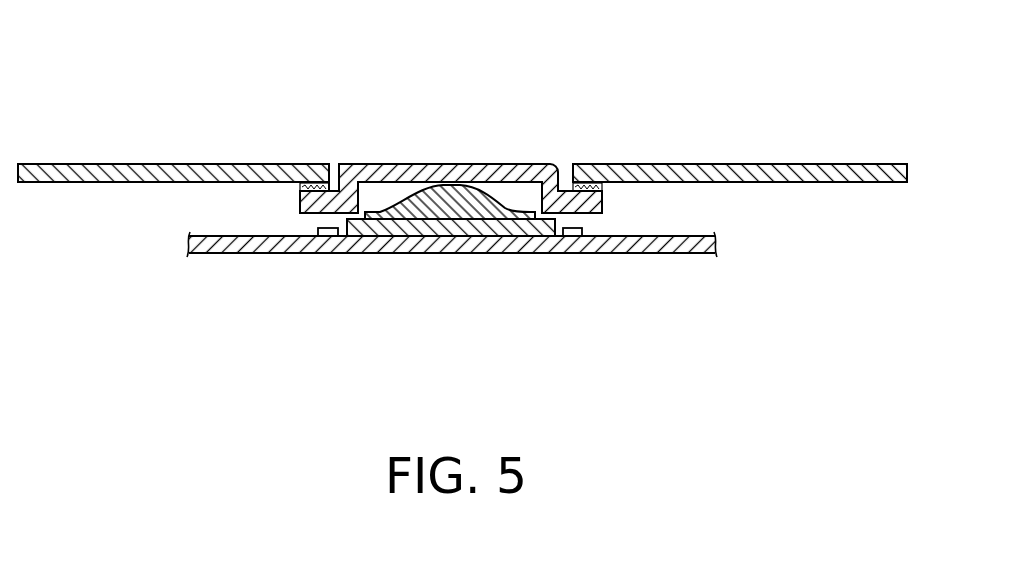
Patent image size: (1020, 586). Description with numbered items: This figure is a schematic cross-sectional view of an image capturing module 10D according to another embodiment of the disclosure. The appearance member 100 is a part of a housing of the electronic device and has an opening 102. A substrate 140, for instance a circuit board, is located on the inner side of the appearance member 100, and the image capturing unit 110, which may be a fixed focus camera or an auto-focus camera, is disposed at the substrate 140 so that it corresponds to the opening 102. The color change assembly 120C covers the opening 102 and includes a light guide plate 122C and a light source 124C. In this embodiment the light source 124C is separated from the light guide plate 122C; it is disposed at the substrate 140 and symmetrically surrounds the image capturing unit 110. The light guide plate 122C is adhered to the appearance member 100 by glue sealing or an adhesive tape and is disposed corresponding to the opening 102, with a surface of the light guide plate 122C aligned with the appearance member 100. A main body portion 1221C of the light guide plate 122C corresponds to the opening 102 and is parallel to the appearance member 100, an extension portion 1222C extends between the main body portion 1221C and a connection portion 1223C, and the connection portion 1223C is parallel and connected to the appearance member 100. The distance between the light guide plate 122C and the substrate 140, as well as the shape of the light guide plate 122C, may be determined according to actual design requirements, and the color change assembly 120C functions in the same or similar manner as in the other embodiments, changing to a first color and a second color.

The image capturing module 10D is at (108, 103).
The appearance member 100 is at (680, 170).
The opening 102 is at (336, 168).
The image capturing unit 110 is at (449, 213).
The color change assembly 120C is at (476, 204).
The light guide plate 122C is at (490, 165).
The main body portion 1221C is at (513, 172).
The extension portion 1222C is at (555, 172).
The connection portion 1223C is at (602, 212).
The light source 124C is at (326, 237).
The substrate 140 is at (233, 247).